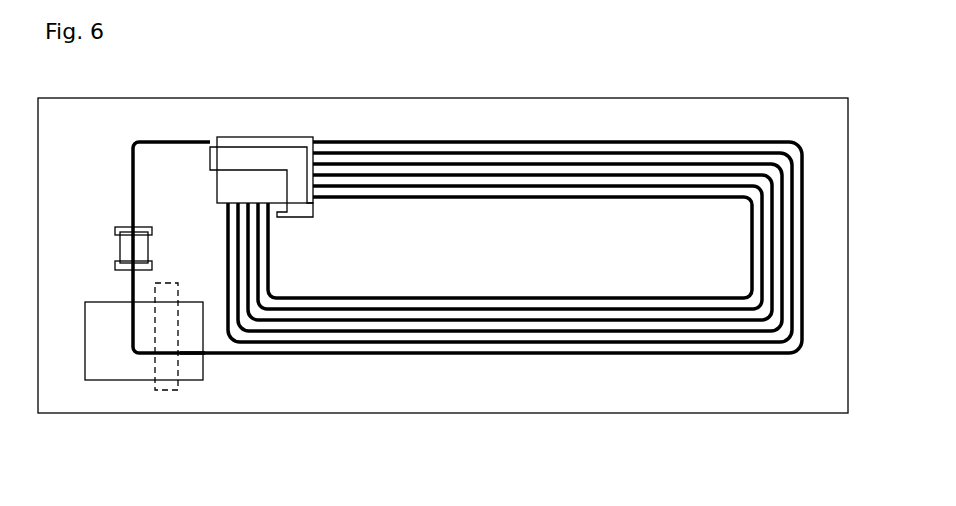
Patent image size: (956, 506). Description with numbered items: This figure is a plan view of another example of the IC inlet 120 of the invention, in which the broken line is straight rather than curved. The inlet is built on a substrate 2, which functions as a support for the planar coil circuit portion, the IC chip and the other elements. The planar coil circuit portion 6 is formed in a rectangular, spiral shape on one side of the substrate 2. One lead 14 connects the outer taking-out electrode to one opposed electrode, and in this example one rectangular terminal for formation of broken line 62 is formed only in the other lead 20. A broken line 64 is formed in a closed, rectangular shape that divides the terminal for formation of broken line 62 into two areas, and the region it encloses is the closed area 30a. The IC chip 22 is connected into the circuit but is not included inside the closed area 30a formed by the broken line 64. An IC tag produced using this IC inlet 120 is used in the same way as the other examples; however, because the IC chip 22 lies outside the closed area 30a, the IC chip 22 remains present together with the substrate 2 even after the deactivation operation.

The IC inlet 120 is at (632, 92).
The substrate 2 is at (578, 393).
The lead 14 is at (190, 142).
The planar coil circuit portion 6 is at (688, 142).
The other lead 20 is at (188, 357).
The IC chip 22 is at (128, 250).
The broken line 64 is at (160, 283).
The terminal for formation of broken line 62 is at (123, 370).
The closed area 30a is at (143, 373).